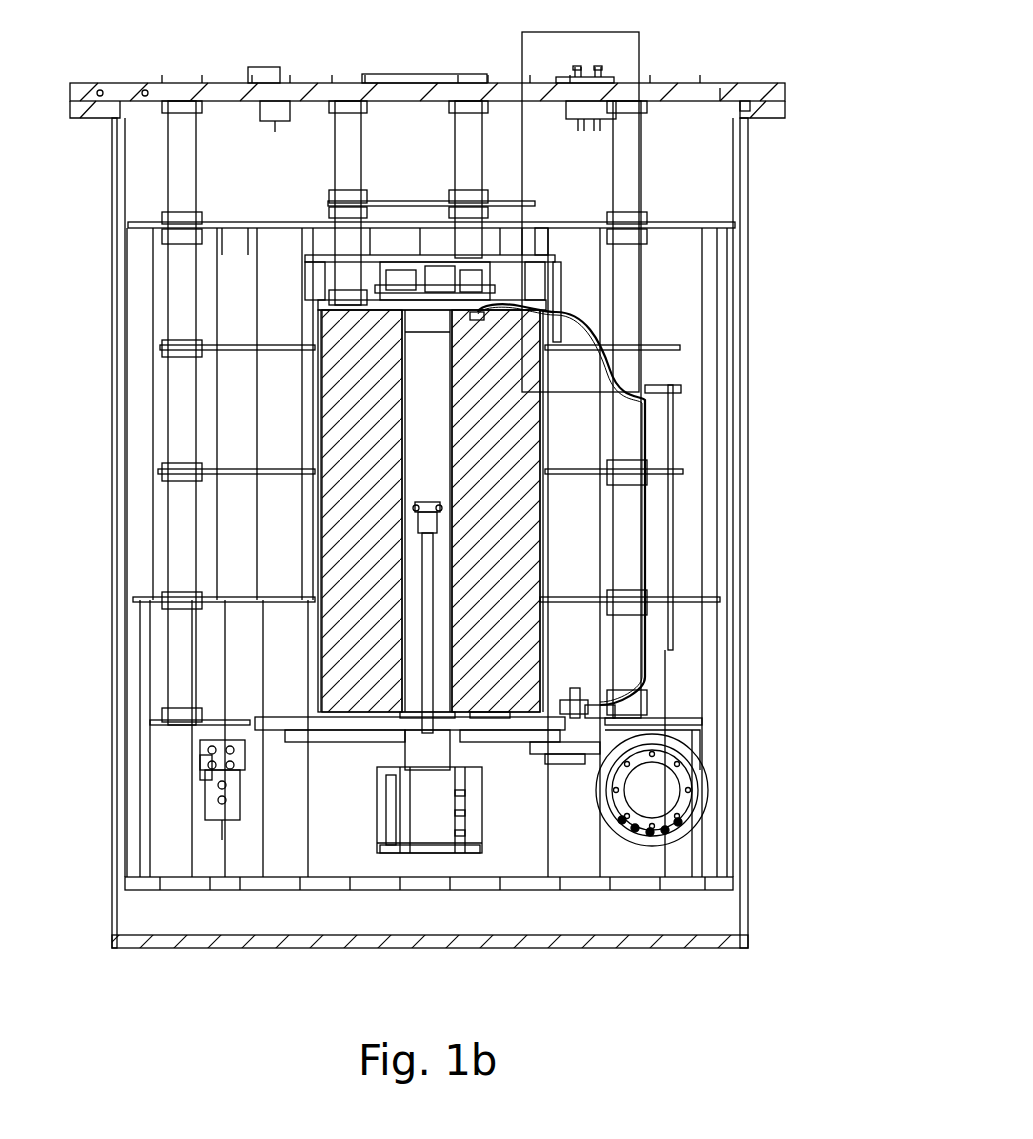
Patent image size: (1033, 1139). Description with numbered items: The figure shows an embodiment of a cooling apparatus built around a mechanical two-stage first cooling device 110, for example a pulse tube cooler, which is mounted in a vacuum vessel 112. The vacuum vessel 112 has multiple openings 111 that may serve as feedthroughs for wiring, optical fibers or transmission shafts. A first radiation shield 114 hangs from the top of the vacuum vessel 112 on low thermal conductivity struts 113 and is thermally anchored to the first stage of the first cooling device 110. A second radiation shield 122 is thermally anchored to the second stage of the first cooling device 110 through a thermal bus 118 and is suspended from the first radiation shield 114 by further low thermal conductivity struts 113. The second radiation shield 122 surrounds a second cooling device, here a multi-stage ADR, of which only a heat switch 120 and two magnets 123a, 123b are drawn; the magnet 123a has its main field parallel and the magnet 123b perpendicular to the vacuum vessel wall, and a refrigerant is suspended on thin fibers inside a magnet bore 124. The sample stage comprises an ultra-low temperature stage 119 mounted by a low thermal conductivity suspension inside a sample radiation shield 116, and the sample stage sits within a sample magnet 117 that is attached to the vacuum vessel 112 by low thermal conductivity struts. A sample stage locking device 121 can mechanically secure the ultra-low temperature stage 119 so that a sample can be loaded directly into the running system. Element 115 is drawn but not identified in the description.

The first cooling device 110 is at (600, 40).
The openings 111 is at (600, 73).
The vacuum vessel 112 is at (762, 92).
The low thermal conductivity struts 113 is at (650, 152).
The first radiation shield 114 is at (640, 214).
The mounting platform 115 is at (538, 247).
The sample radiation shield 116 is at (510, 347).
The sample magnet 117 is at (457, 328).
The thermal bus 118 is at (652, 412).
The ultra-low temperature stage 119 is at (440, 520).
The heat switch 120 is at (215, 745).
The sample stage locking device 121 is at (640, 722).
The second radiation shield 122 is at (690, 600).
The magnet 123a is at (660, 765).
The magnet 123b is at (488, 823).
The magnet bore 124 is at (660, 805).